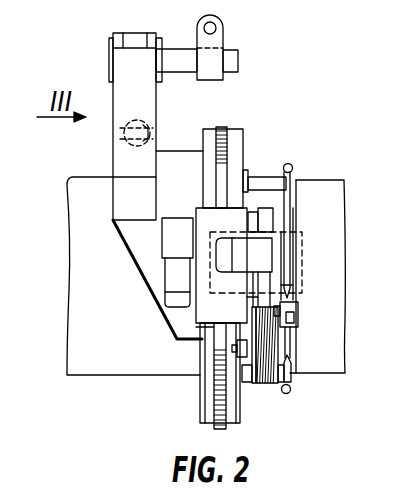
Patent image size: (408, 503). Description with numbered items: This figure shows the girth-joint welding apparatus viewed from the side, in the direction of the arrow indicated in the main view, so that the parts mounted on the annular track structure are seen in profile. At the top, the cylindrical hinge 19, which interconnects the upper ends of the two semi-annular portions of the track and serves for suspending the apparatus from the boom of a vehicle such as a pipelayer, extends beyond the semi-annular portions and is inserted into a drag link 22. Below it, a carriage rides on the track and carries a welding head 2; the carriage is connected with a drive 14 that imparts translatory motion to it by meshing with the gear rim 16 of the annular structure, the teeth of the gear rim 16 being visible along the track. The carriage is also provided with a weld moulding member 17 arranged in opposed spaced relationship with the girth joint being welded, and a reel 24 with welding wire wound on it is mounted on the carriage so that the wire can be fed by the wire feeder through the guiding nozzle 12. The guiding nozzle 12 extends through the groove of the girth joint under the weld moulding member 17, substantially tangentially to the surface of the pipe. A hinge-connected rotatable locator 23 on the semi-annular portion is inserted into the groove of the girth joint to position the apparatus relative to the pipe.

The welding head 2 is at (302, 238).
The guiding nozzle 12 is at (285, 283).
The drive 14 is at (170, 270).
The gear rim 16 is at (214, 400).
The weld moulding member 17 is at (298, 312).
The cylindrical hinge 19 is at (238, 61).
The drag link 22 is at (218, 40).
The rotatable locator 23 is at (292, 178).
The reel 24 is at (266, 355).